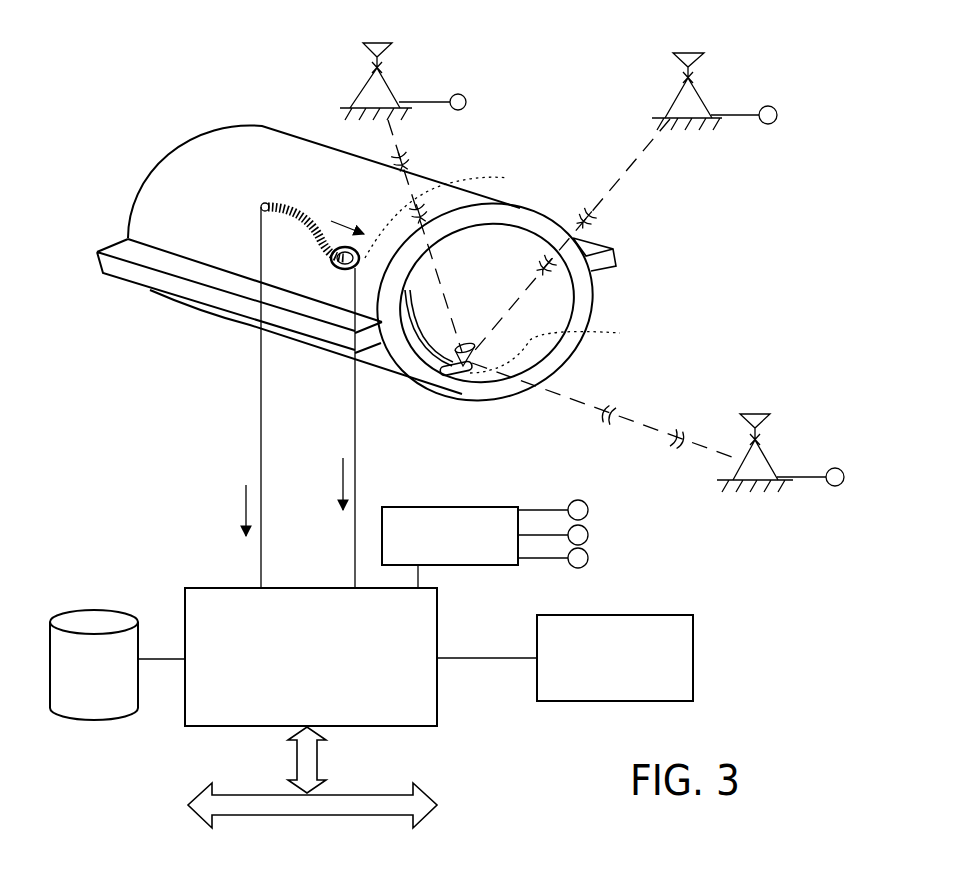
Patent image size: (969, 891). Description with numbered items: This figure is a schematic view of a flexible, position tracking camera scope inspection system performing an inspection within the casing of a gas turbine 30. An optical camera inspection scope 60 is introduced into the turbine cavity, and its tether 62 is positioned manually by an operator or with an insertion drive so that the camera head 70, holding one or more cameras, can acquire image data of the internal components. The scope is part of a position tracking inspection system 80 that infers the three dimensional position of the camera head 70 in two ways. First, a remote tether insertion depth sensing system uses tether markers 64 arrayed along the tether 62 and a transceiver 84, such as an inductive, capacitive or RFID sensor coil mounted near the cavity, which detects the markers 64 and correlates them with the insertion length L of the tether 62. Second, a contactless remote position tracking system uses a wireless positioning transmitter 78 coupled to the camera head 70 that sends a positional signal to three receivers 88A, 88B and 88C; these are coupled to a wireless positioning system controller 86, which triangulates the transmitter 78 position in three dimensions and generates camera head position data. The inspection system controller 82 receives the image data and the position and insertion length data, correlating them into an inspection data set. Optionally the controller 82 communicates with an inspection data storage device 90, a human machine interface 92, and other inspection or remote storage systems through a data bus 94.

The gas turbine 30 is at (206, 98).
The optical camera inspection scope 60 is at (418, 370).
The tether 62 is at (417, 307).
The tether markers or sensors 64 is at (334, 262).
The camera head 70 is at (464, 378).
The wireless positioning transmitter 78 is at (561, 346).
The position tracking inspection system 80 is at (114, 450).
The inspection system controller 82 is at (422, 703).
The transceiver 84 is at (372, 250).
The wireless positioning system controller 86 is at (493, 558).
The receiver 88A is at (388, 87).
The receiver 88B is at (700, 97).
The receiver 88C is at (765, 458).
The inspection data storage device 90 is at (87, 655).
The human machine interface 92 is at (675, 648).
The data bus 94 is at (223, 805).